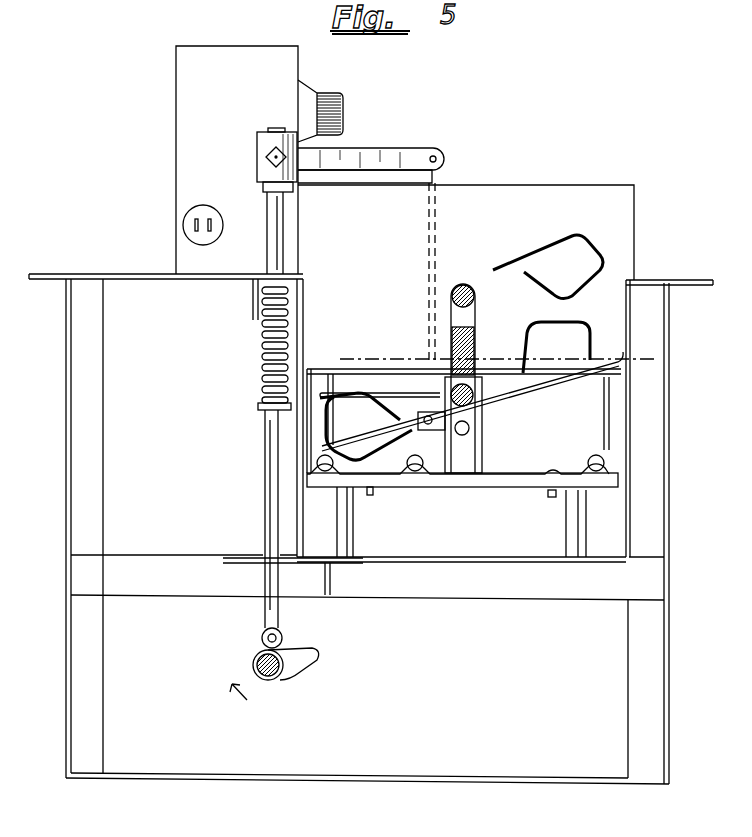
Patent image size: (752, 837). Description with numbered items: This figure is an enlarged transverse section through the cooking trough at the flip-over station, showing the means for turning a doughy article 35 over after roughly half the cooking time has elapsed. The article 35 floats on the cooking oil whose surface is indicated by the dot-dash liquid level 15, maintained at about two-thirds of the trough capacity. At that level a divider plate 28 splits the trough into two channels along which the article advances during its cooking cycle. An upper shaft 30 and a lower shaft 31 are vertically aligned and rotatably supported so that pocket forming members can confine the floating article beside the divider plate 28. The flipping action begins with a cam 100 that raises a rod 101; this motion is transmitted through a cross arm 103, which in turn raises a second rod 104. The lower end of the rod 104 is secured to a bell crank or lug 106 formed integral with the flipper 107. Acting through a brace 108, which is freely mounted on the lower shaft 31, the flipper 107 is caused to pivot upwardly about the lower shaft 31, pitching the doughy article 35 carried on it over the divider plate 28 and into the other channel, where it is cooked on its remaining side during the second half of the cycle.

The liquid level 15 is at (612, 358).
The divider plate 28 is at (474, 327).
The upper shaft 30 is at (465, 285).
The lower shaft 31 is at (470, 386).
The doughy article 35 is at (348, 350).
The cam 100 is at (306, 660).
The rod 101 is at (267, 463).
The cross arm 103 is at (389, 153).
The rod 104 is at (437, 173).
The bell crank or lug 106 is at (447, 443).
The flipper 107 is at (401, 393).
The brace 108 is at (477, 413).